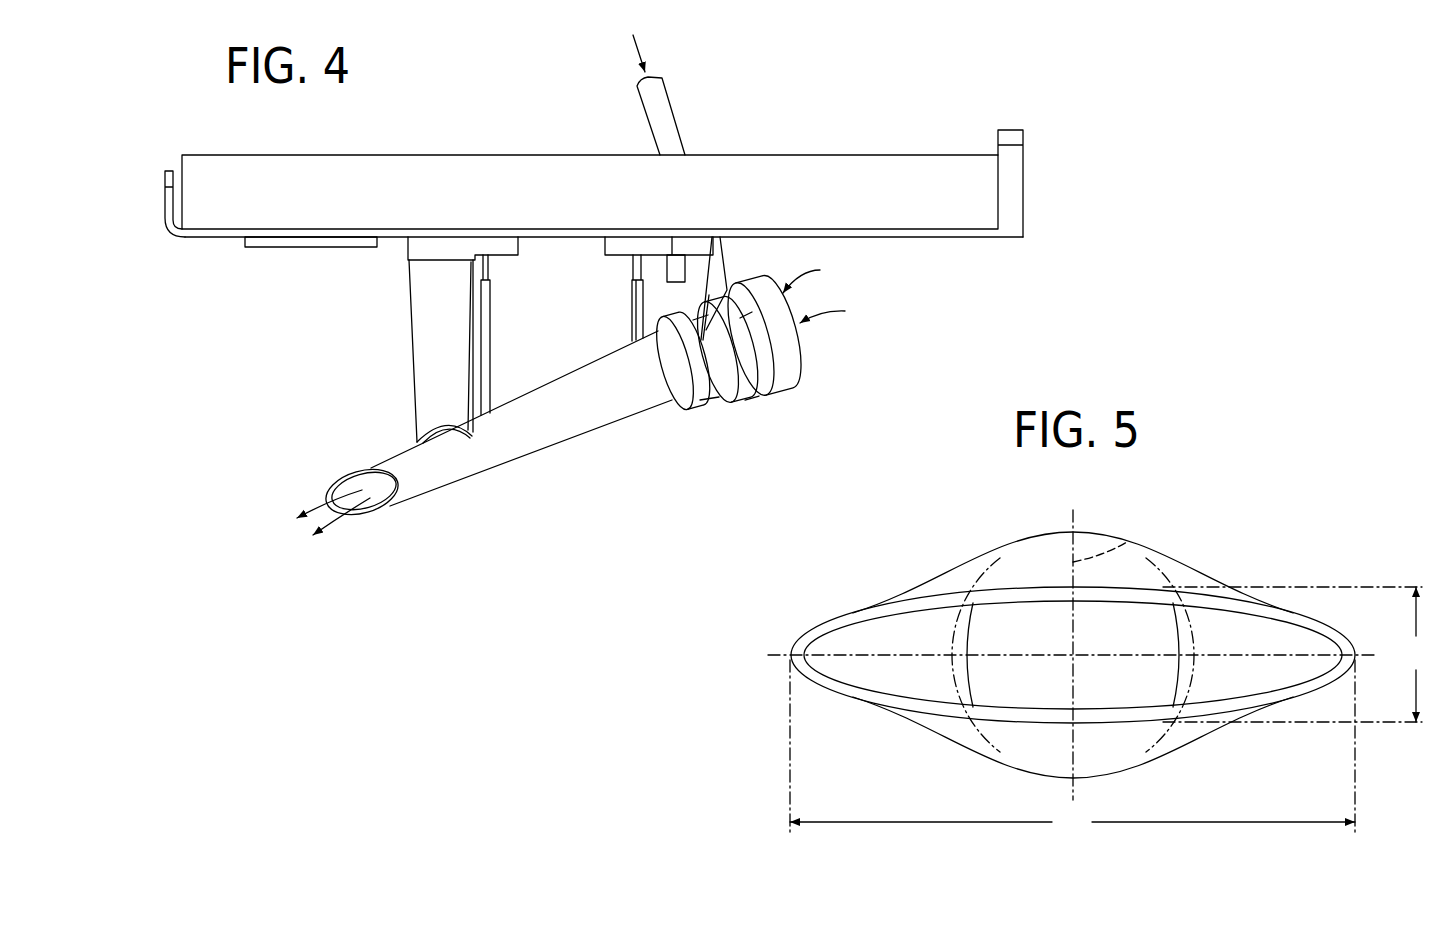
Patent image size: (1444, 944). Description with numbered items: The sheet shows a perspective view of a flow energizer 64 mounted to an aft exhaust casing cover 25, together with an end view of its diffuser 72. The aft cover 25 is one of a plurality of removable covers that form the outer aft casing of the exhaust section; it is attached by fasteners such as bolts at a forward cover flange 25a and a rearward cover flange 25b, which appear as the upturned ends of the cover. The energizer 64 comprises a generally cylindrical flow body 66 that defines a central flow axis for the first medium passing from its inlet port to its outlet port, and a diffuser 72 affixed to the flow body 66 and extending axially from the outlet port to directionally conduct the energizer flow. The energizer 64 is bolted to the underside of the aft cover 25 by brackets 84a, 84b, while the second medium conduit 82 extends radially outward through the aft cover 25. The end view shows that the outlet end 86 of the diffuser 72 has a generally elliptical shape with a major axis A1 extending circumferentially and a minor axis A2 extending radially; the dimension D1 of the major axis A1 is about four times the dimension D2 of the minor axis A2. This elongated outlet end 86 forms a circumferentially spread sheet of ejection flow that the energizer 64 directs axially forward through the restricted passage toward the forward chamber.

In FIG. 4, the aft exhaust casing cover 25 is at (397, 229).
In FIG. 4, the forward cover flange 25a is at (178, 204).
In FIG. 4, the rearward cover flange 25b is at (998, 186).
In FIG. 4, the second medium conduit 82 is at (668, 120).
In FIG. 4, the bracket 84a is at (424, 323).
In FIG. 4, the bracket 84b is at (683, 297).
In FIG. 4, the flow energizer 64 is at (637, 428).
In FIG. 4, the flow body 66 is at (760, 392).
In FIG. 4, the diffuser 72 is at (537, 451).
In FIG. 5, the diffuser 72 is at (987, 562).
In FIG. 4, the outlet end 86 is at (352, 511).
In FIG. 5, the outlet end 86 is at (828, 625).
In FIG. 5, the major axis A1 is at (887, 655).
In FIG. 5, the minor axis A2 is at (1126, 542).
In FIG. 5, the dimension of the major axis D1 is at (1072, 749).
In FIG. 5, the dimension of the minor axis D2 is at (1295, 654).